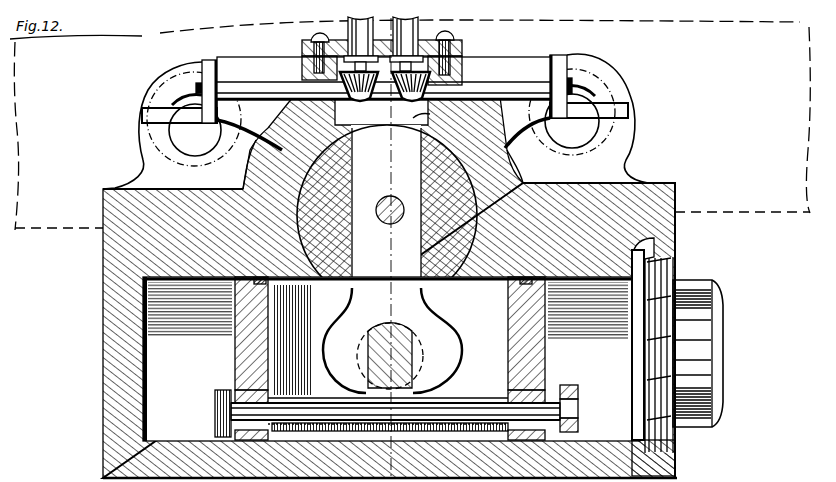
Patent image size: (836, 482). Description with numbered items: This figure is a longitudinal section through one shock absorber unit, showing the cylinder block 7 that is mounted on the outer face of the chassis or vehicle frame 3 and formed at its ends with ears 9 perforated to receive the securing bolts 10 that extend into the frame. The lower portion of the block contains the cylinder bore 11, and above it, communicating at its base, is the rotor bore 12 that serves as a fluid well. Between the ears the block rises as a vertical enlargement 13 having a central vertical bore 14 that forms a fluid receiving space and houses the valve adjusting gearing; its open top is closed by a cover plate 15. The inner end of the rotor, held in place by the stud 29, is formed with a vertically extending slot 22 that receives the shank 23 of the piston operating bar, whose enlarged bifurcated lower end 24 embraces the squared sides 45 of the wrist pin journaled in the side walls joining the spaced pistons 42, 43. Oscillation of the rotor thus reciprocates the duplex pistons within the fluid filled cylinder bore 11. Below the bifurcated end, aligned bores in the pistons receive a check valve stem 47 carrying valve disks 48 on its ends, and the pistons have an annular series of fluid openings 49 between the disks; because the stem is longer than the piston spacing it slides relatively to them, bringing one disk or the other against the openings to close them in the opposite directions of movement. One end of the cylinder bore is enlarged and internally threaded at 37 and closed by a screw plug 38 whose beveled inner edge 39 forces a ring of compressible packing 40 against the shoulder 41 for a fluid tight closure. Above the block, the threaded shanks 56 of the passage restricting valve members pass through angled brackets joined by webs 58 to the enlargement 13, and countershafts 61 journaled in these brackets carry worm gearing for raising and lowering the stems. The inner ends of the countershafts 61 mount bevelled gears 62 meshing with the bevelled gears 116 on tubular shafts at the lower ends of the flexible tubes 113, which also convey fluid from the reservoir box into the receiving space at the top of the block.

The chassis or vehicle frame 3 is at (768, 60).
The cylinder block 7 is at (103, 250).
The ears 9 is at (158, 70).
The securing bolts 10 is at (140, 156).
The cylinder bore 11 is at (148, 380).
The rotor bore 12 is at (470, 192).
The vertical enlargement 13 is at (484, 24).
The central vertical bore 14 is at (462, 68).
The cover plate 15 is at (420, 56).
The vertically extending slot 22 is at (248, 148).
The shank of piston operating bar 23 is at (386, 209).
The enlarged bifurcated lower end 24 is at (444, 340).
The stud 29 is at (384, 218).
The internally threaded enlargement 37 is at (676, 460).
The screw plug 38 is at (724, 298).
The beveled inner edge 39 is at (660, 254).
The ring of compressible packing 40 is at (640, 300).
The shoulder 41 is at (650, 236).
The piston 42 is at (262, 334).
The piston 43 is at (540, 326).
The squared sides of wrist pin 45 is at (360, 353).
The check valve stem 47 is at (288, 418).
The valve disks 48 is at (215, 410).
The fluid openings 49 is at (275, 392).
The threaded shanks of restricting valve members 56 is at (270, 62).
The webs 58 is at (548, 58).
The countershafts 61 is at (250, 86).
The bevelled gears 62 is at (413, 100).
The flexible tubes 113 is at (423, 473).
The bevelled gears 116 is at (385, 86).